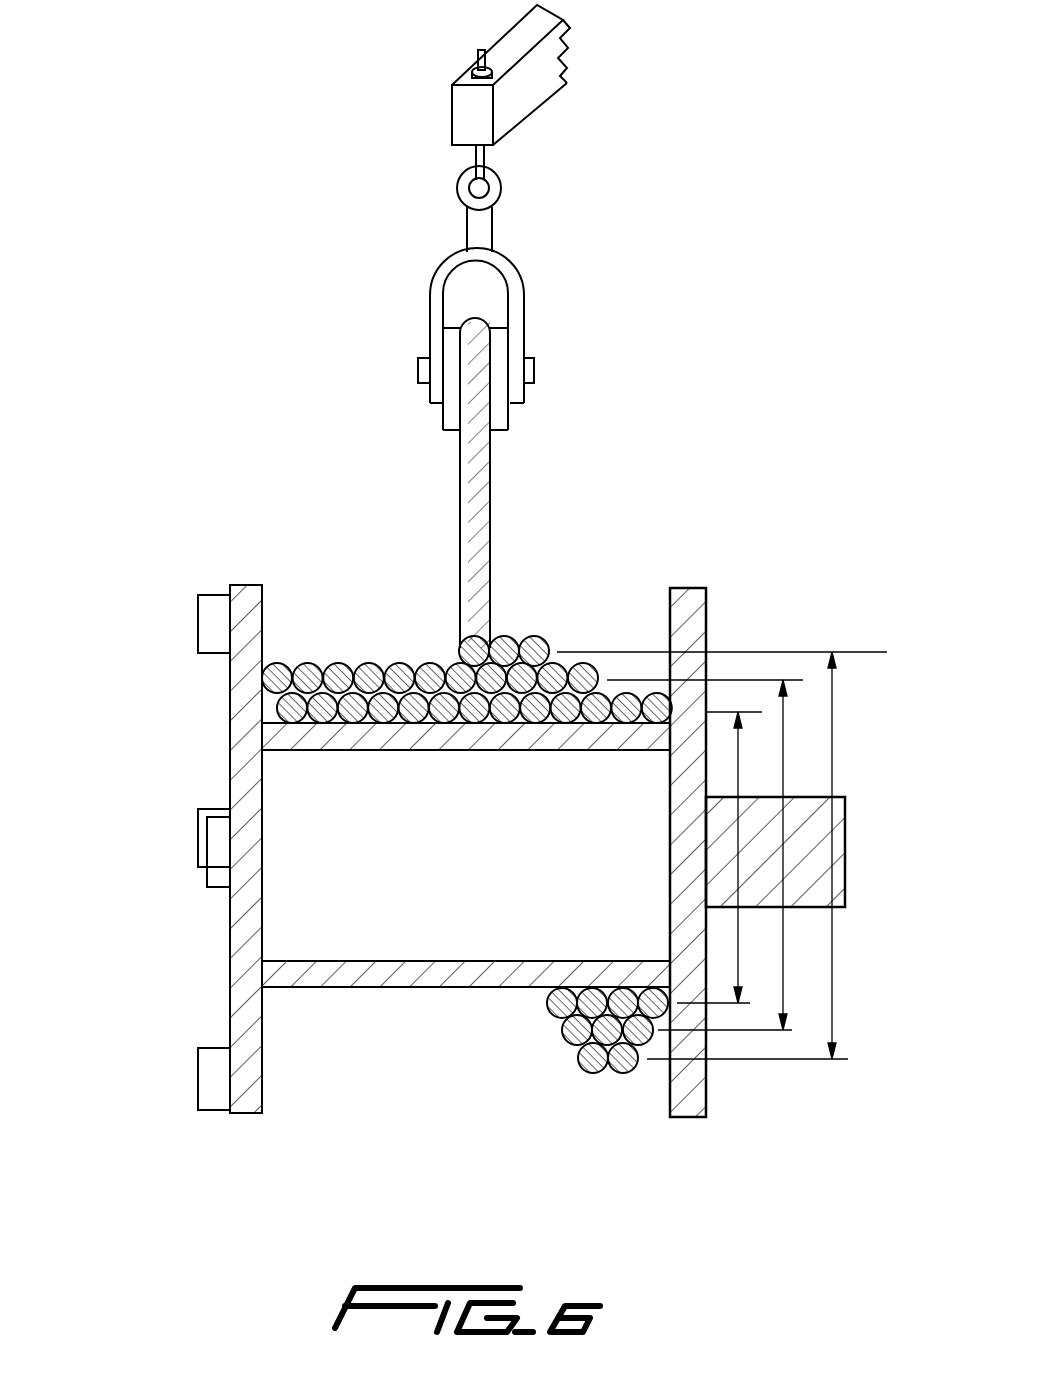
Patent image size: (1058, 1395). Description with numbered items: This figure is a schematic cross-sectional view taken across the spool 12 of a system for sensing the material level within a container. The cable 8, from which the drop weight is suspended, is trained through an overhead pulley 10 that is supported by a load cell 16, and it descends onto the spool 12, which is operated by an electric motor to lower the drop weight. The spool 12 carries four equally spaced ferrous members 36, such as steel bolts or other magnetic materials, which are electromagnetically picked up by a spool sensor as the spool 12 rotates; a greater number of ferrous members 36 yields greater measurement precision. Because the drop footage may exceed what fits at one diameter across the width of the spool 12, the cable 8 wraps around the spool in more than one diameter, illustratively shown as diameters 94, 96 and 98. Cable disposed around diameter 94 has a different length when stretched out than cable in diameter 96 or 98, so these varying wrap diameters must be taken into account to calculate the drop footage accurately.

The cable 8 is at (400, 663).
The pulley 10 is at (524, 298).
The spool 12 is at (697, 588).
The load cell 16 is at (538, 85).
The ferrous members 36 is at (197, 617).
The diameter 94 is at (742, 775).
The diameter 96 is at (783, 738).
The diameter 98 is at (833, 697).